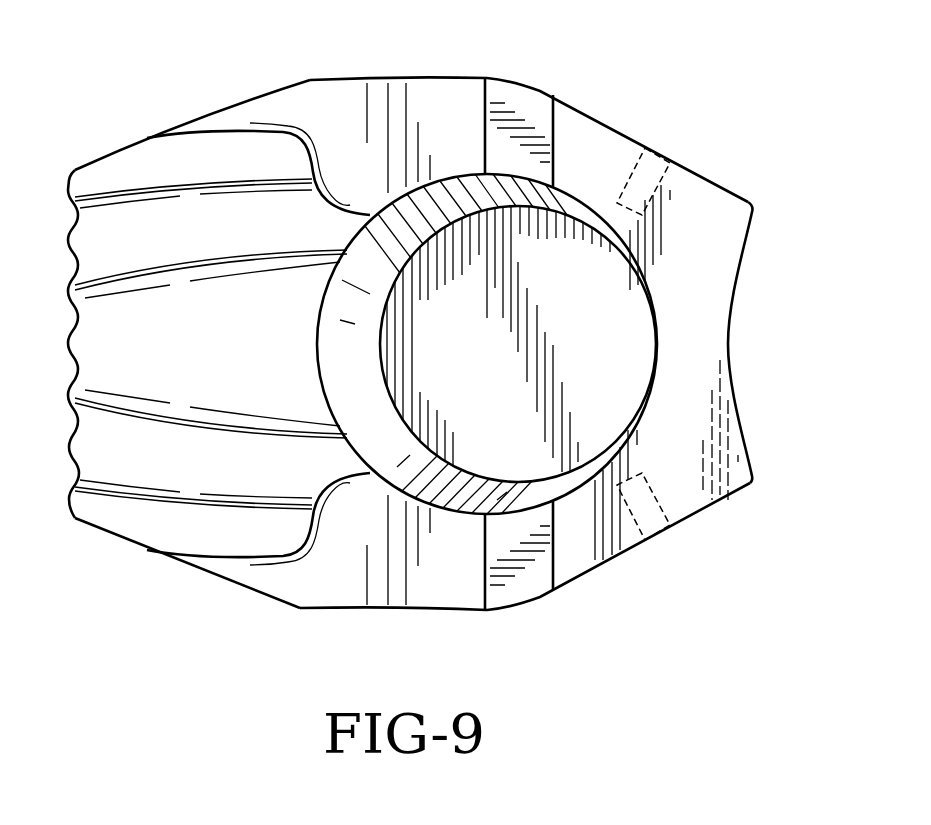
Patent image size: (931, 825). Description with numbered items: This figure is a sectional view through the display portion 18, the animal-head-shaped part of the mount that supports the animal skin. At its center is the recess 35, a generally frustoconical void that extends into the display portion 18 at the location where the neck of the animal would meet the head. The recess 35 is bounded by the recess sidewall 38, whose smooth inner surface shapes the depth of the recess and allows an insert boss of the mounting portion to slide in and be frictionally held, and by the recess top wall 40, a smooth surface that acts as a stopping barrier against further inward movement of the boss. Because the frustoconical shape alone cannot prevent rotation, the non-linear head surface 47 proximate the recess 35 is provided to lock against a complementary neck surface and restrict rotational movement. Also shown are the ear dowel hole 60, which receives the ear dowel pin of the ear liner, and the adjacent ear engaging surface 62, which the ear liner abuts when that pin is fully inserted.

The display portion 18 is at (143, 124).
The recess 35 is at (316, 331).
The recess sidewall 38 is at (347, 368).
The recess top wall 40 is at (489, 384).
The non-linear head surface 47 is at (455, 115).
The ear dowel hole 60 is at (663, 153).
The ear engaging surface 62 is at (704, 176).